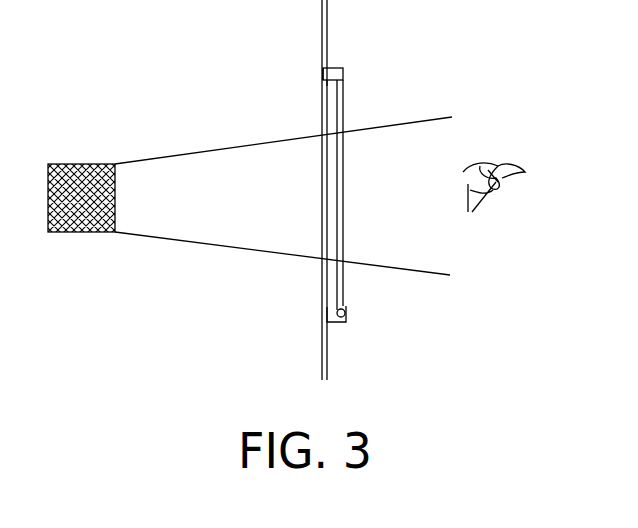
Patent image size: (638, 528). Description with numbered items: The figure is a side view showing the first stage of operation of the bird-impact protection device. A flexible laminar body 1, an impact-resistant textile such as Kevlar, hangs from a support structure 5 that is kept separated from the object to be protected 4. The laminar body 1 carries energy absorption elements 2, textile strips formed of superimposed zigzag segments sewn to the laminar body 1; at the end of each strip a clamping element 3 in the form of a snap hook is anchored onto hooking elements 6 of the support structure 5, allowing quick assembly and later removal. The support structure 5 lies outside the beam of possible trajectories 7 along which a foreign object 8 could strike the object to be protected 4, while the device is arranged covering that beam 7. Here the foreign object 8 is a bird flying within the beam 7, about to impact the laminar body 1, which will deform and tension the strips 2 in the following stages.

The flexible laminar body 1 is at (345, 193).
The energy absorption elements 2 is at (343, 113).
The clamping element 3 is at (343, 71).
The object to be protected 4 is at (69, 164).
The support structure 5 is at (329, 361).
The hooking elements 6 is at (323, 68).
The beam of possible trajectories 7 is at (408, 270).
The foreign object 8 is at (500, 165).